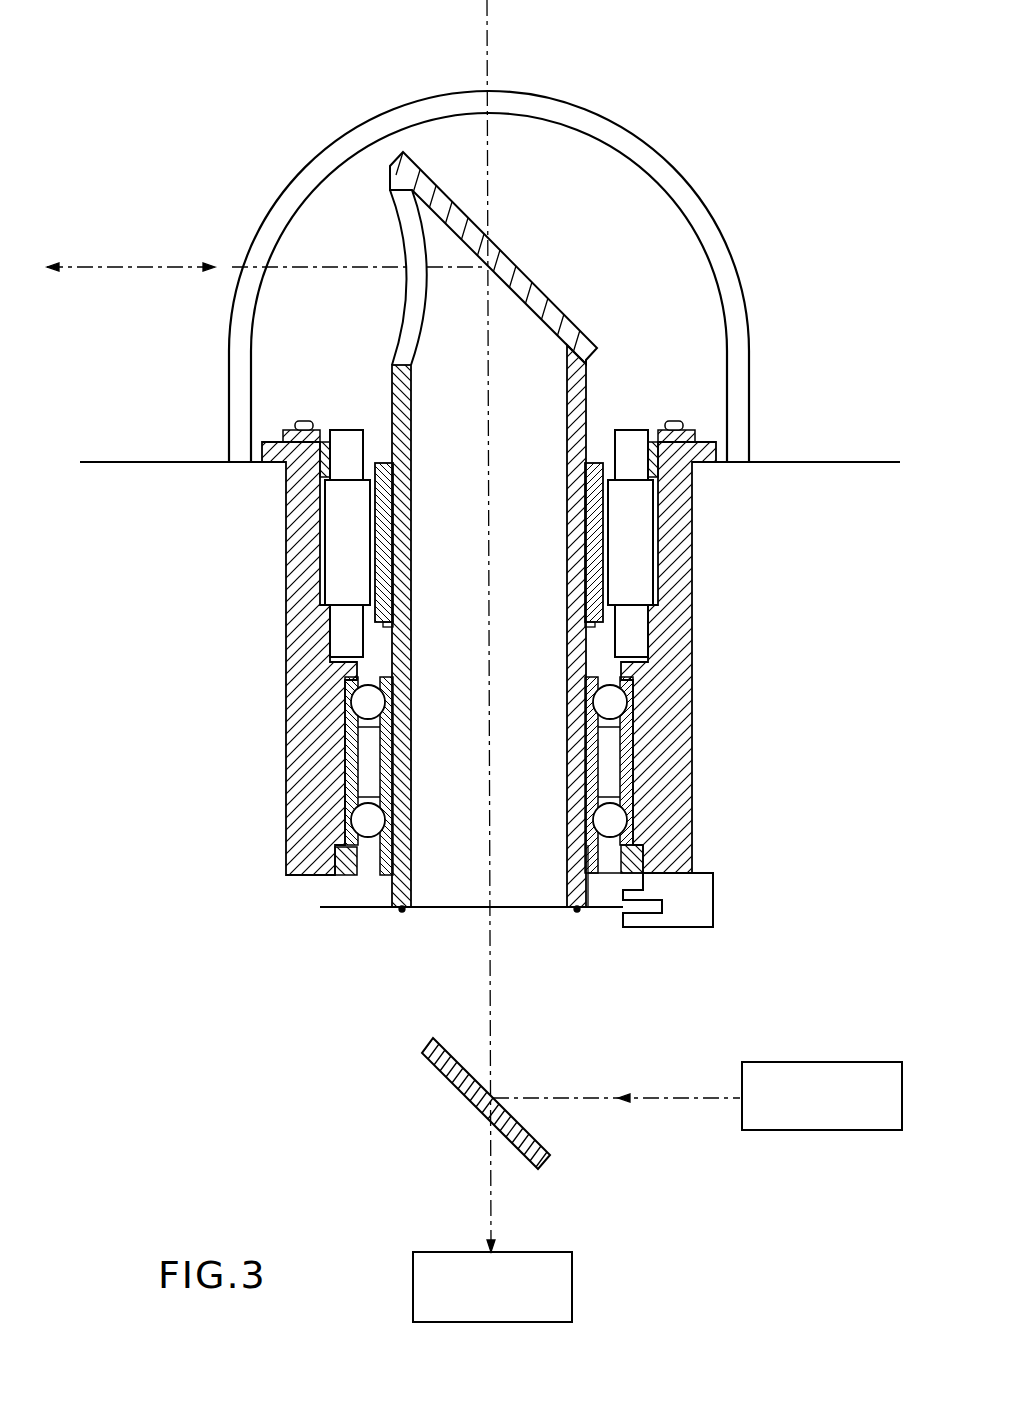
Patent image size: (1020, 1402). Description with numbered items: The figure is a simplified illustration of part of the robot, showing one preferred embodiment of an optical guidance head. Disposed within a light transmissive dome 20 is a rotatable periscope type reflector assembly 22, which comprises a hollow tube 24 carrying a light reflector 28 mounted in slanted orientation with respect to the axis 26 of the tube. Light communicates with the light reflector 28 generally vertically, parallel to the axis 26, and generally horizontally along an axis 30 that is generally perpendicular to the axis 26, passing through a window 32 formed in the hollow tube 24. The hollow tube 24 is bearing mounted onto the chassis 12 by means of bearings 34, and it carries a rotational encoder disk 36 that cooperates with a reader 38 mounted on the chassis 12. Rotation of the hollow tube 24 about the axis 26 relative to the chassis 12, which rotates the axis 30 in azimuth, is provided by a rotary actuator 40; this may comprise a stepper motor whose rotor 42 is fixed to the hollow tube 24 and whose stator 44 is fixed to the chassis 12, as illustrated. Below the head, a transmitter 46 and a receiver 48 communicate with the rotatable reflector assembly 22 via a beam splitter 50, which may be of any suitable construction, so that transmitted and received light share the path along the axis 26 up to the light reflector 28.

The chassis 12 is at (287, 714).
The light transmissive dome 20 is at (276, 196).
The rotatable periscope type reflector assembly 22 is at (553, 245).
The hollow tube 24 is at (393, 400).
The axis 26 is at (490, 158).
The light reflector 28 is at (438, 184).
The axis 30 is at (362, 277).
The window 32 is at (410, 332).
The bearings 34 is at (366, 826).
The rotational encoder disk 36 is at (456, 910).
The reader 38 is at (708, 896).
The rotary actuator 40 is at (303, 538).
The rotor 42 is at (387, 514).
The stator 44 is at (343, 628).
The transmitter 46 is at (805, 1128).
The receiver 48 is at (572, 1277).
The beam splitter 50 is at (477, 1107).